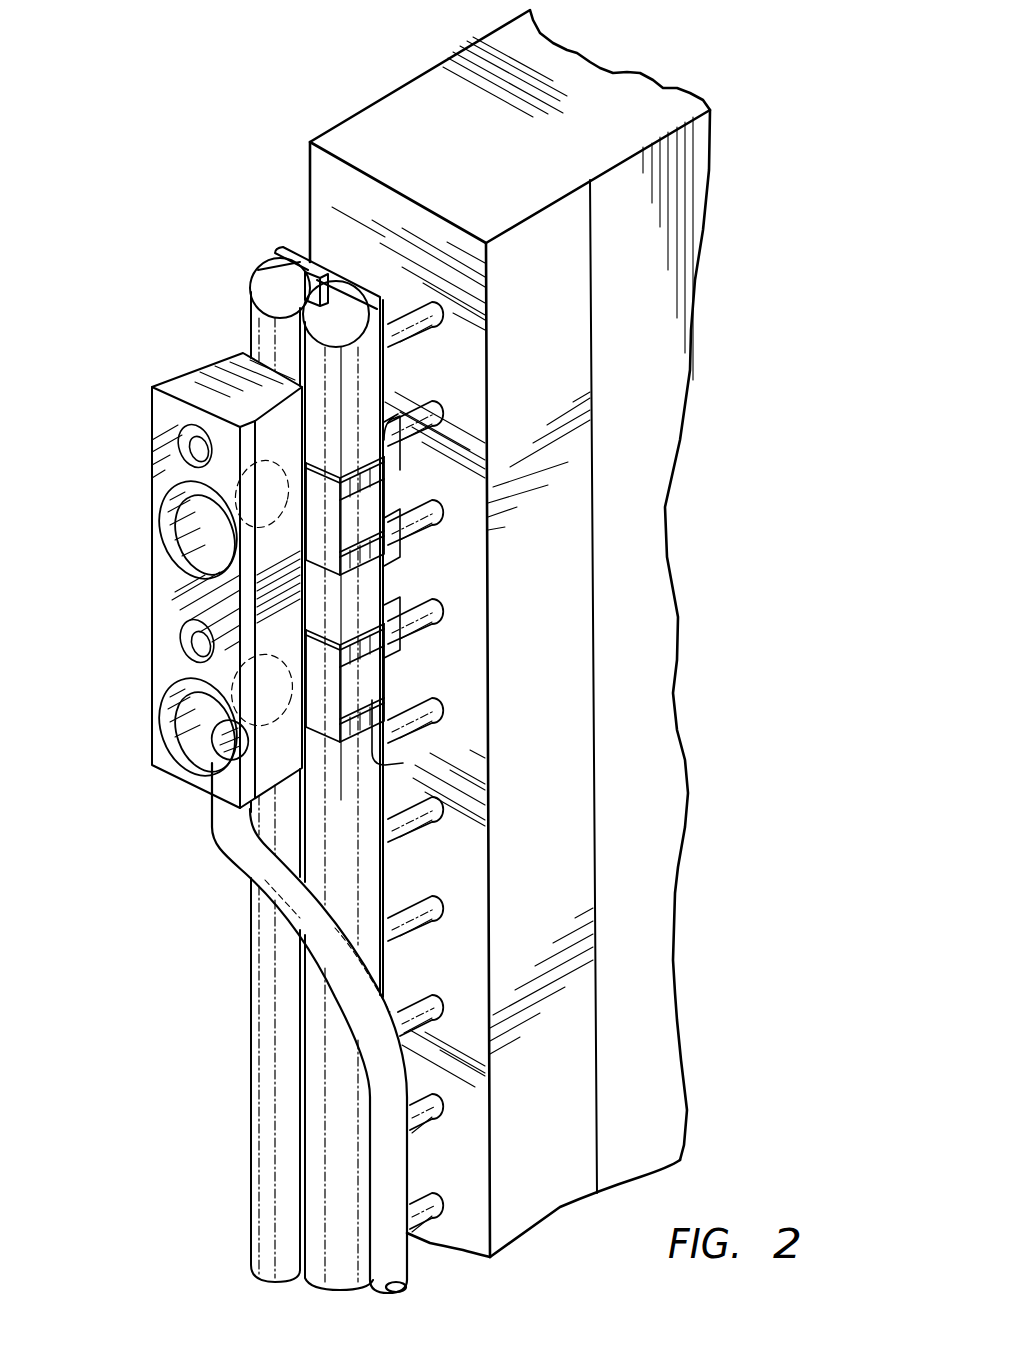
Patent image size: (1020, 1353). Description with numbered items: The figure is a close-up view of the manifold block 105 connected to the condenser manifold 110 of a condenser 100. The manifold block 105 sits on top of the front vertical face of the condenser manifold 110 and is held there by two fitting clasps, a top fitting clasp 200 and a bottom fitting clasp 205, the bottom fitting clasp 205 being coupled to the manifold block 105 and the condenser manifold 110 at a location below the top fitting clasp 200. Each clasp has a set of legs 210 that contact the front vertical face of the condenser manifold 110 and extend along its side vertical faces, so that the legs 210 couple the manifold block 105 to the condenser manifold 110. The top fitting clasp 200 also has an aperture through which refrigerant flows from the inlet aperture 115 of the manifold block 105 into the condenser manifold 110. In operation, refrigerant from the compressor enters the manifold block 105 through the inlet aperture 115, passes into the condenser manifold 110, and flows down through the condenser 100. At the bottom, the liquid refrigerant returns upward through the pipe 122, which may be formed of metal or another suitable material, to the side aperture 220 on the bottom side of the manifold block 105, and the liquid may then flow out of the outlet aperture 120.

The condenser 100 is at (702, 590).
The manifold block 105 is at (172, 777).
The condenser manifold 110 is at (257, 257).
The inlet aperture 115 is at (212, 530).
The outlet aperture 120 is at (175, 718).
The pipe 122 is at (240, 870).
The top fitting clasp 200 is at (404, 545).
The bottom fitting clasp 205 is at (404, 630).
The legs 210 is at (377, 455).
The side aperture 220 is at (192, 765).